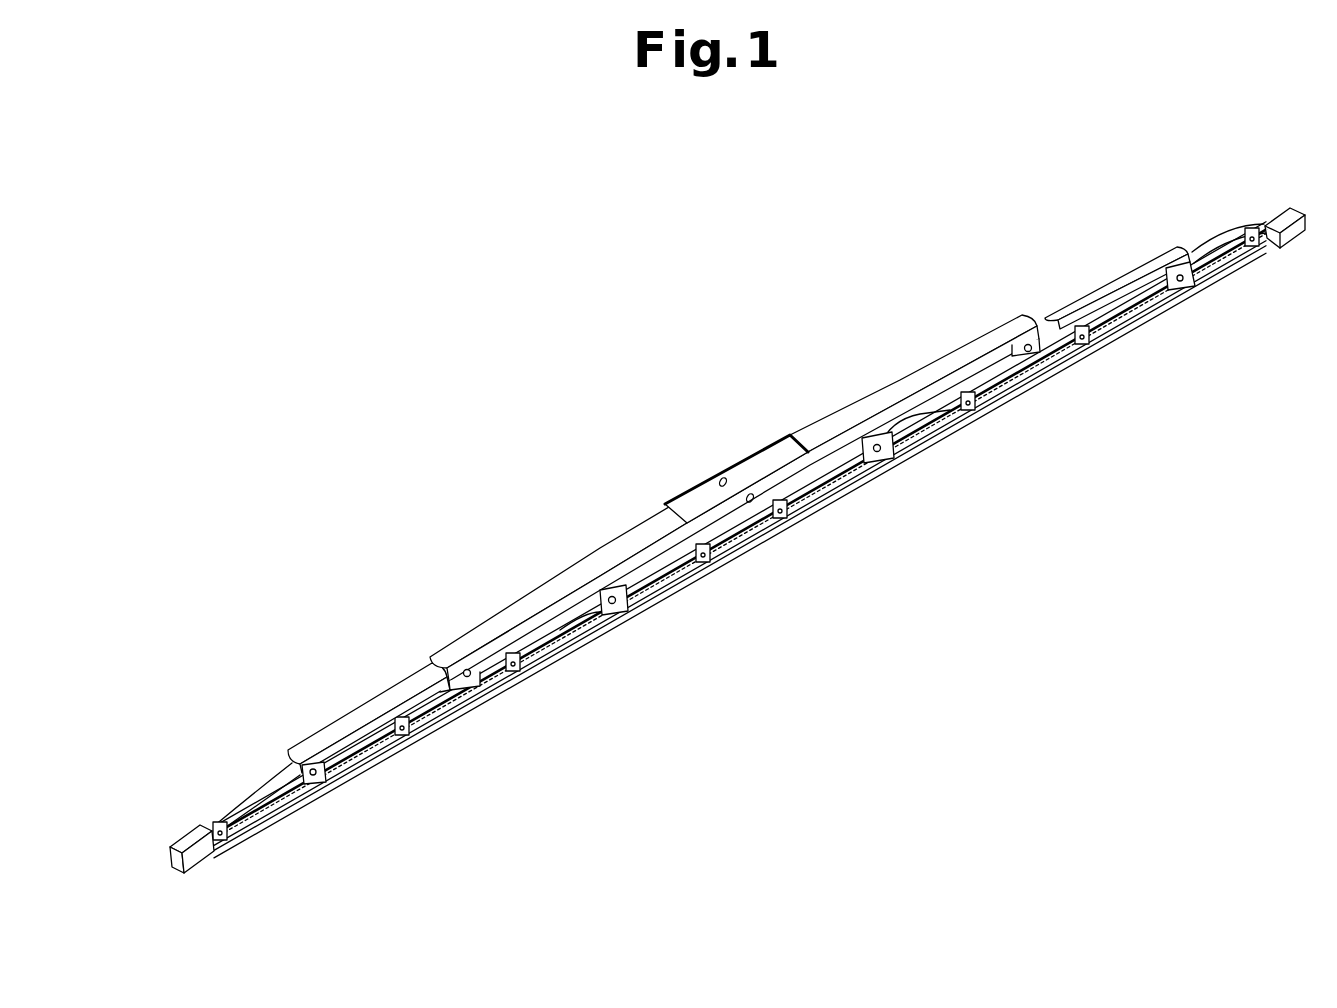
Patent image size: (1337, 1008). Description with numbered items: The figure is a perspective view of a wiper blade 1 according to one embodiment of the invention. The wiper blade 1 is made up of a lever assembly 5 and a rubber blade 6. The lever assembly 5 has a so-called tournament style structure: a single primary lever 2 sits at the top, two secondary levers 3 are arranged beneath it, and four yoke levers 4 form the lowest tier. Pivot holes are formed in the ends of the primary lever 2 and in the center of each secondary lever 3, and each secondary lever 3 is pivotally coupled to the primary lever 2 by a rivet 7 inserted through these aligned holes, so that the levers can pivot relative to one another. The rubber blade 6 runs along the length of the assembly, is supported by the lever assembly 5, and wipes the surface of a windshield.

The wiper blade 1 is at (386, 436).
The primary lever 2 is at (827, 422).
The secondary lever 3 is at (342, 725).
The yoke lever 4 is at (238, 803).
The lever assembly 5 is at (699, 469).
The rubber blade 6 is at (173, 857).
The rivet 7 is at (322, 778).